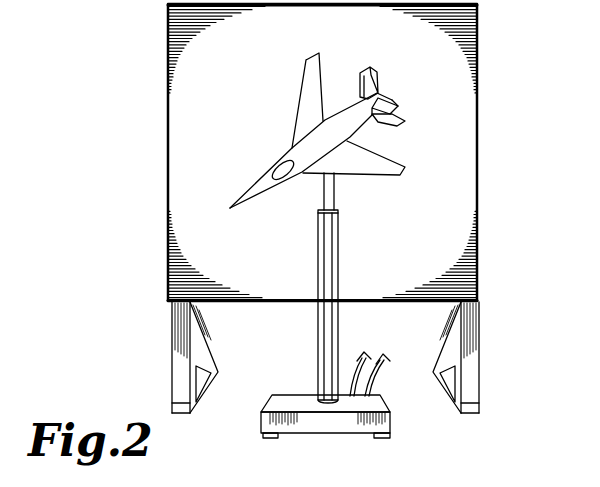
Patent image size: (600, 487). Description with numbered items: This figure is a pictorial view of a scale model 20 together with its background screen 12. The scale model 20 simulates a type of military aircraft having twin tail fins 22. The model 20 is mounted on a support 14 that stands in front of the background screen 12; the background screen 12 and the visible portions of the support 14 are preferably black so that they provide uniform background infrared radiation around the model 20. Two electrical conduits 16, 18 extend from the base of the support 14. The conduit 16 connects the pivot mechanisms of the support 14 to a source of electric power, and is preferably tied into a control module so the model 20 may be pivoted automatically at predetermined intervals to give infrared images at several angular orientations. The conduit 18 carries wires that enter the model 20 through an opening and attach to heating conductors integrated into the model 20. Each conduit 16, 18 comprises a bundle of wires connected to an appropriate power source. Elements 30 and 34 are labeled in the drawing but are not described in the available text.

The background screen 12 is at (473, 157).
The support 14 is at (318, 344).
The electrical conduit 16 is at (381, 366).
The electrical conduit 18 is at (355, 372).
The scale model 20 is at (280, 126).
The twin tail fins 22 is at (392, 100).
The component 30 is at (266, 477).
The component 34 is at (456, 479).